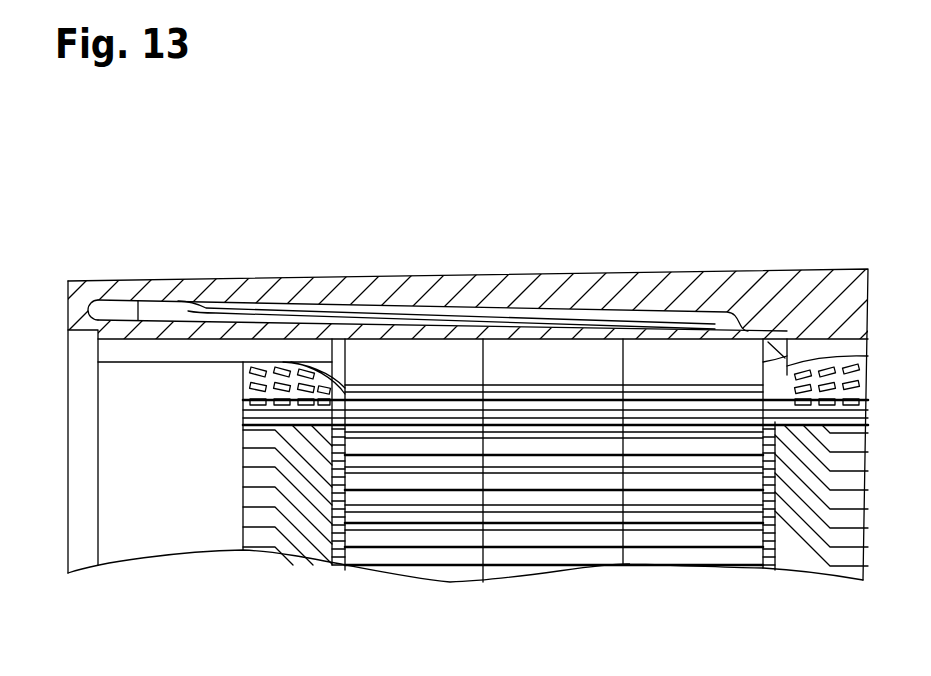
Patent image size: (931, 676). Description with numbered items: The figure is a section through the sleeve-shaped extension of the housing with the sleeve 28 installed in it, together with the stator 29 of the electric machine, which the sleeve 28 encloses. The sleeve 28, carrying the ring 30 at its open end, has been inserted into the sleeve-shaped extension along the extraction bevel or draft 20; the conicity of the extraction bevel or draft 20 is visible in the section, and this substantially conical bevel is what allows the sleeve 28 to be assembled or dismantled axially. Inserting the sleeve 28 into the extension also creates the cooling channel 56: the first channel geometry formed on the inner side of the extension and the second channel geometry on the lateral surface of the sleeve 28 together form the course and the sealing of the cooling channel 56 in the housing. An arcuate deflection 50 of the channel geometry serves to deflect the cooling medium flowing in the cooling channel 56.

The extraction bevel or draft 20 is at (465, 379).
The sleeve 28 is at (191, 532).
The stator 29 is at (581, 534).
The ring 30 is at (108, 287).
The arcuate deflection 50 is at (125, 329).
The cooling channel 56 is at (182, 313).